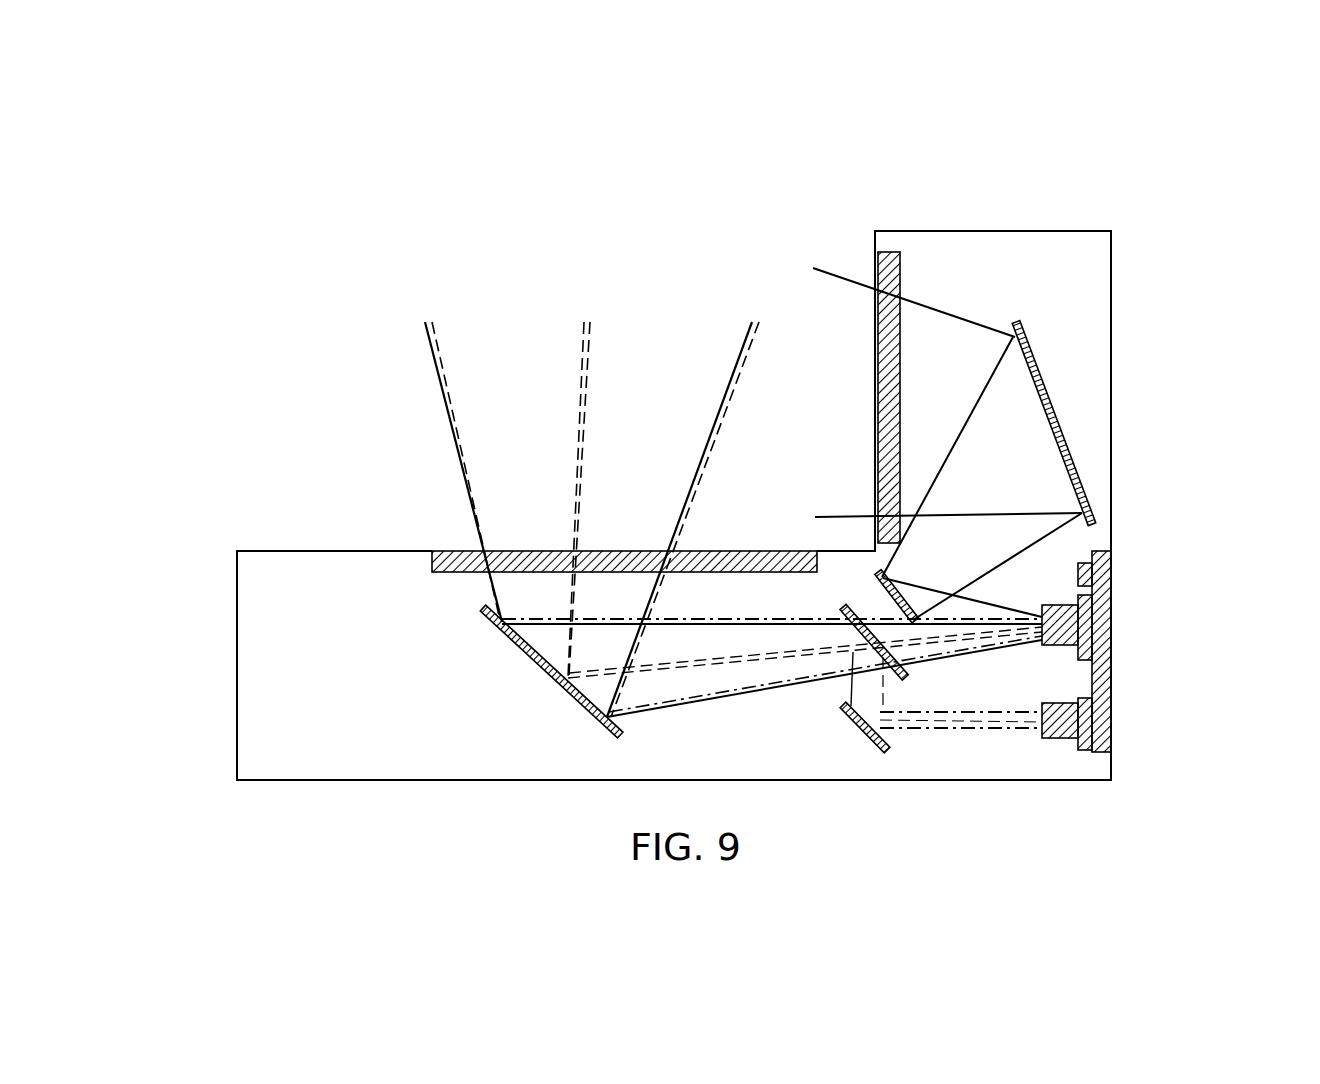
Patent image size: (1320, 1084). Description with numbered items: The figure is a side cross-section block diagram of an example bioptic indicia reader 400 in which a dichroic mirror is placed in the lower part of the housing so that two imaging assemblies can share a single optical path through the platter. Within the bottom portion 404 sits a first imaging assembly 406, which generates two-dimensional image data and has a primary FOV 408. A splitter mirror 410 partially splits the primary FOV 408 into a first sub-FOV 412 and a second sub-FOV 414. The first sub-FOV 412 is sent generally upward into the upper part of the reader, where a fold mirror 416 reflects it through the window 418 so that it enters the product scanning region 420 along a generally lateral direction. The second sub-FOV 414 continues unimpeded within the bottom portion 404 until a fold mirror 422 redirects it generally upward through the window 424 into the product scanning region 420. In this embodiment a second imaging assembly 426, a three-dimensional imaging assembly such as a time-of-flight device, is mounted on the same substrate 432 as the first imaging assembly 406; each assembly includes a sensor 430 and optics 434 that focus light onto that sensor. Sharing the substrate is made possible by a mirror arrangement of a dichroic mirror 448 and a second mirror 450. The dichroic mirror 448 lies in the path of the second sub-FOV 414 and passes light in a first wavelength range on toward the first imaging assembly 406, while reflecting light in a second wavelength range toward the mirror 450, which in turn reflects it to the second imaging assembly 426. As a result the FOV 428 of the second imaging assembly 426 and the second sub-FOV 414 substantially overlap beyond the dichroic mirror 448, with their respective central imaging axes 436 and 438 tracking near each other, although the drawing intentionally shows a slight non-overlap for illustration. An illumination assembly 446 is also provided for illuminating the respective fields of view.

The bioptic indicia reader 400 is at (1183, 178).
The bottom portion 404 is at (212, 697).
The first imaging assembly 406 is at (1176, 636).
The primary FOV 408 is at (990, 602).
The splitter mirror 410 is at (880, 575).
The first sub-FOV 412 is at (960, 440).
The second sub-FOV 414 is at (446, 395).
The fold mirror 416 is at (1033, 343).
The window 418 is at (890, 262).
The product scanning region 420 is at (556, 301).
The fold mirror 422 is at (520, 665).
The window 424 is at (745, 552).
The second imaging assembly 426 is at (1175, 734).
The FOV 428 is at (452, 443).
The sensor 430 is at (1076, 606).
The substrate 432 is at (1095, 565).
The optics 434 is at (1086, 650).
The central imaging axis 436 is at (575, 484).
The central imaging axis 438 is at (583, 460).
The illumination assembly 446 is at (1097, 552).
The dichroic mirror 448 is at (852, 616).
The mirror 450 is at (855, 725).